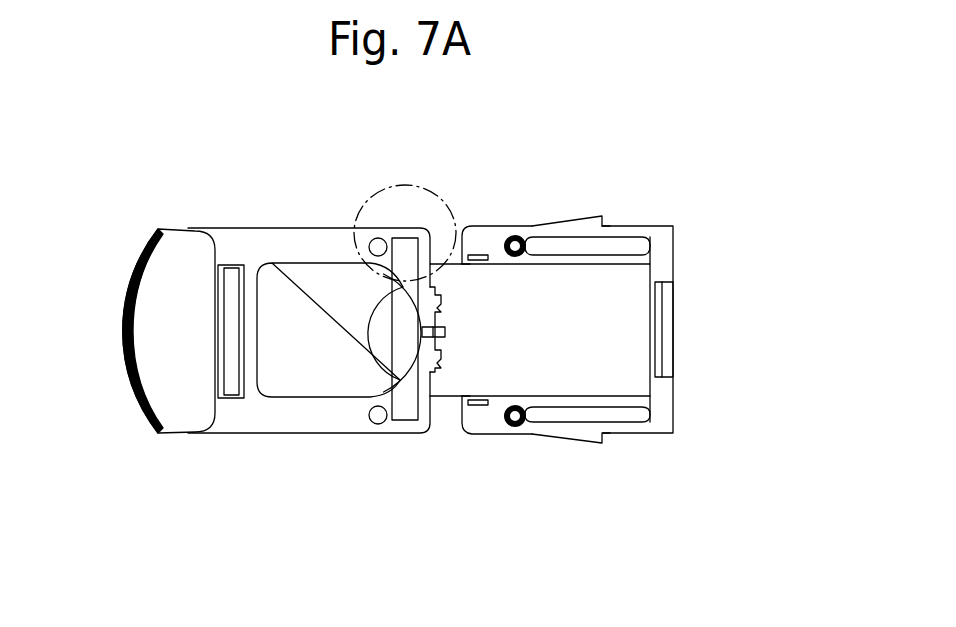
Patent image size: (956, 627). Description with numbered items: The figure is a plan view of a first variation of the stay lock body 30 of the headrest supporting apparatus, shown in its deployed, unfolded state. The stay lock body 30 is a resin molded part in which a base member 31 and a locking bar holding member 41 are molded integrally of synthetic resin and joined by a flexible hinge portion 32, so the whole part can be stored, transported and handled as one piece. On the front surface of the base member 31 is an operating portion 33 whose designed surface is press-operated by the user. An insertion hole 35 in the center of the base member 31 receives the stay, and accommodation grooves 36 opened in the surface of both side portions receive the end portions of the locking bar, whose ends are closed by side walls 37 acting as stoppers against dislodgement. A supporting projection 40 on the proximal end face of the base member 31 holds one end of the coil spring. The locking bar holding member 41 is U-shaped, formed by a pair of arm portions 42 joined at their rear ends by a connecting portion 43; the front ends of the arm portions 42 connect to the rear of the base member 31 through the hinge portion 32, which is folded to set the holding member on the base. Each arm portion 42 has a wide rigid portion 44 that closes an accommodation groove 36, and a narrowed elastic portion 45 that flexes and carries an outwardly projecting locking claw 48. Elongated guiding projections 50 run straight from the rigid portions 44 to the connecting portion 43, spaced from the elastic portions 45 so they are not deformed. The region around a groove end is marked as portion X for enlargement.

The stay lock body 30 is at (183, 491).
The base member 31 is at (275, 433).
The hinge portion 32 is at (444, 410).
The operating portion 33 is at (137, 253).
The insertion hole 35 is at (305, 277).
The accommodation groove 36 is at (367, 330).
The side wall 37 is at (403, 237).
The supporting projection 40 is at (443, 316).
The locking bar holding member 41 is at (668, 265).
The arm portion 42 is at (535, 435).
The connecting portion 43 is at (665, 403).
The rigid portion 44 is at (481, 434).
The elastic portion 45 is at (618, 437).
The locking claw 48 is at (585, 216).
The elongated guiding projection 50 is at (586, 266).
The portion X is at (447, 203).